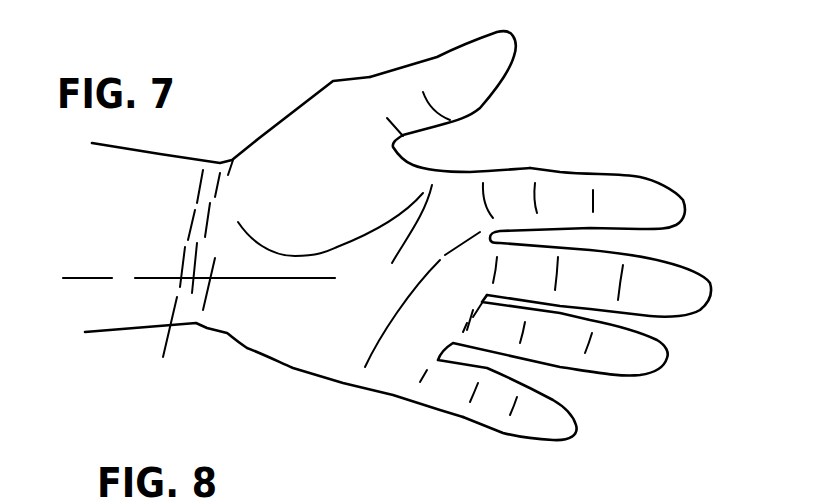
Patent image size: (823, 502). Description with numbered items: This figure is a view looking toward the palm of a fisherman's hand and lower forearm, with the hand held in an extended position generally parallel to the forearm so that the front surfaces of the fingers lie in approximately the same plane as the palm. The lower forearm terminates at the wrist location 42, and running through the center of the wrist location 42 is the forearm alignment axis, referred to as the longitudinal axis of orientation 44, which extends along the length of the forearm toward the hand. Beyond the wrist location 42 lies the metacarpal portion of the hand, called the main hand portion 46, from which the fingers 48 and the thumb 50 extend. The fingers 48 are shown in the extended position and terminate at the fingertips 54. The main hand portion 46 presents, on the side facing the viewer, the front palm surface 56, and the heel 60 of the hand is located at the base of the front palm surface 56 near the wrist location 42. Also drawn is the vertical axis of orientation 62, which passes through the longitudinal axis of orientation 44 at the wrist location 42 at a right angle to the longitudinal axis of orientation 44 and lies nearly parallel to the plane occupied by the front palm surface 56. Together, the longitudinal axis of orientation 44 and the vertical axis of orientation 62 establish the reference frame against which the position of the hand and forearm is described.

The wrist location 42 is at (231, 126).
The longitudinal axis of orientation 44 is at (77, 273).
The main hand portion 46 is at (307, 348).
The fingers 48 is at (610, 350).
The thumb 50 is at (423, 80).
The fingertips 54 is at (710, 283).
The front palm surface 56 is at (340, 313).
The heel 60 is at (235, 260).
The vertical axis of orientation 62 is at (205, 163).